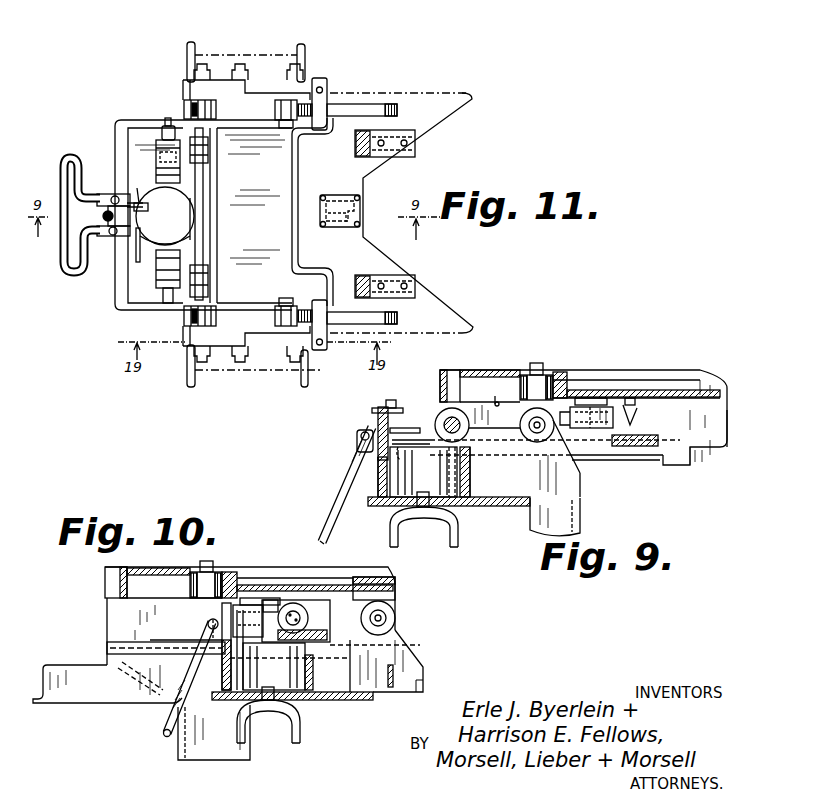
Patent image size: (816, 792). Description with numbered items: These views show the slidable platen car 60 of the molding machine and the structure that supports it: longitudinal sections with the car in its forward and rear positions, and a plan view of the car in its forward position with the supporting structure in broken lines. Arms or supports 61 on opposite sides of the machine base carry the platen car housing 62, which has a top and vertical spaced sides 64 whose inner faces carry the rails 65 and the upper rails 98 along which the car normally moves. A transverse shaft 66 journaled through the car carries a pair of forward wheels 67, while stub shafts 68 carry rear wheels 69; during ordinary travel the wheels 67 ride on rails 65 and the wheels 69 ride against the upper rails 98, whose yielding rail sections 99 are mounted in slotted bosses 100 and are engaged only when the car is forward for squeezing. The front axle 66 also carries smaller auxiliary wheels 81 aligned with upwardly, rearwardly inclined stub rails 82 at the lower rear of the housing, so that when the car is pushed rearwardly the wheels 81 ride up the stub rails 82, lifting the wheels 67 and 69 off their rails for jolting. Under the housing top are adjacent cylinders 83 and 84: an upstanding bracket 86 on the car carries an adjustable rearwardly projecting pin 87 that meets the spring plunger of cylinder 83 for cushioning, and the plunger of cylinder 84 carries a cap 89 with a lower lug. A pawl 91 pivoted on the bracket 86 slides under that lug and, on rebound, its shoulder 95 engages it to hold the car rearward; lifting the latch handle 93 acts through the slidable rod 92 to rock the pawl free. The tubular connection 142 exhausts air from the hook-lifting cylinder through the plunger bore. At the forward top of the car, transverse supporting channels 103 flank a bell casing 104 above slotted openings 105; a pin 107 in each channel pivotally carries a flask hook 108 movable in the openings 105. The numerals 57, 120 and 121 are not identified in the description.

In FIG. 9, the screw 57 is at (495, 400).
In FIG. 11, the platen car 60 is at (136, 277).
In FIG. 9, the platen car 60 is at (568, 472).
In FIG. 10, the platen car 60 is at (363, 684).
In FIG. 9, the arms or supports 61 is at (577, 521).
In FIG. 10, the arms or supports 61 is at (190, 748).
In FIG. 11, the platen car housing 62 is at (388, 95).
In FIG. 9, the platen car housing 62 is at (718, 448).
In FIG. 10, the platen car housing 62 is at (425, 660).
In FIG. 11, the sides 64 is at (196, 232).
In FIG. 9, the sides 64 is at (484, 408).
In FIG. 10, the sides 64 is at (148, 609).
In FIG. 11, the rails 65 is at (398, 110).
In FIG. 9, the rails 65 is at (598, 448).
In FIG. 10, the rails 65 is at (155, 642).
In FIG. 11, the transverse shaft 66 is at (218, 181).
In FIG. 9, the transverse shaft 66 is at (448, 416).
In FIG. 10, the transverse shaft 66 is at (310, 618).
In FIG. 11, the forward wheels 67 is at (185, 110).
In FIG. 10, the forward wheels 67 is at (280, 600).
In FIG. 11, the stub shafts 68 is at (285, 128).
In FIG. 9, the stub shafts 68 is at (522, 428).
In FIG. 10, the stub shafts 68 is at (394, 612).
In FIG. 11, the rear wheels 69 is at (312, 107).
In FIG. 9, the rear wheels 69 is at (530, 418).
In FIG. 10, the rear wheels 69 is at (396, 619).
In FIG. 11, the auxiliary wheels 81 is at (208, 150).
In FIG. 9, the auxiliary wheels 81 is at (456, 428).
In FIG. 10, the auxiliary wheels 81 is at (244, 650).
In FIG. 11, the inclined stub rails 82 is at (358, 144).
In FIG. 9, the inclined stub rails 82 is at (658, 440).
In FIG. 10, the inclined stub rails 82 is at (306, 641).
In FIG. 11, the cylinder 83 is at (335, 197).
In FIG. 11, the cylinder 84 is at (346, 228).
In FIG. 9, the cylinder 84 is at (591, 428).
In FIG. 10, the cylinder 84 is at (262, 610).
In FIG. 11, the upstanding bracket 86 is at (138, 238).
In FIG. 9, the upstanding bracket 86 is at (385, 408).
In FIG. 10, the upstanding bracket 86 is at (228, 580).
In FIG. 11, the pin 87 is at (138, 188).
In FIG. 9, the pin 87 is at (385, 405).
In FIG. 10, the pin 87 is at (218, 605).
In FIG. 9, the cap 89 is at (584, 398).
In FIG. 10, the cap 89 is at (250, 598).
In FIG. 11, the pawl 91 is at (174, 220).
In FIG. 9, the pawl 91 is at (393, 447).
In FIG. 10, the pawl 91 is at (230, 650).
In FIG. 11, the slidable rod 92 is at (104, 216).
In FIG. 9, the slidable rod 92 is at (370, 452).
In FIG. 11, the latch handle 93 is at (66, 241).
In FIG. 9, the latch handle 93 is at (341, 496).
In FIG. 10, the latch handle 93 is at (163, 733).
In FIG. 11, the shoulder 95 is at (163, 212).
In FIG. 9, the shoulder 95 is at (405, 428).
In FIG. 9, the upper rails 98 is at (560, 392).
In FIG. 10, the upper rails 98 is at (356, 592).
In FIG. 9, the rail sections 99 is at (523, 395).
In FIG. 10, the rail sections 99 is at (193, 594).
In FIG. 9, the slotted bosses 100 is at (538, 366).
In FIG. 10, the slotted bosses 100 is at (205, 562).
In FIG. 11, the supporting channels 103 is at (158, 150).
In FIG. 9, the bell casing 104 is at (428, 458).
In FIG. 10, the bell casing 104 is at (290, 665).
In FIG. 9, the slotted openings 105 is at (396, 508).
In FIG. 10, the slotted openings 105 is at (292, 701).
In FIG. 11, the pin 107 is at (158, 146).
In FIG. 11, the flask hook 108 is at (166, 128).
In FIG. 9, the flask hook 108 is at (443, 523).
In FIG. 10, the flask hook 108 is at (256, 736).
In FIG. 11, the bracket 120 is at (197, 88).
In FIG. 11, the tab 121 is at (322, 88).
In FIG. 9, the tubular connection 142 is at (630, 410).